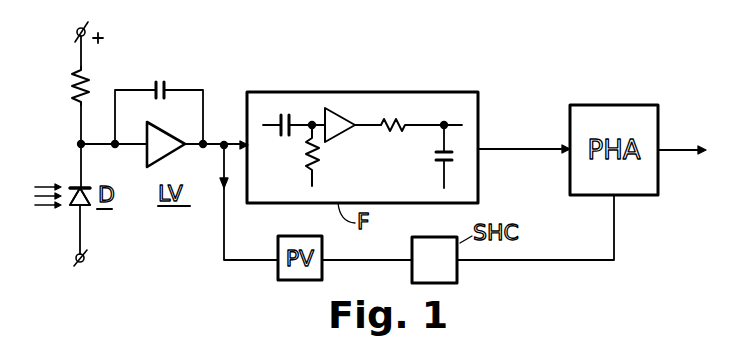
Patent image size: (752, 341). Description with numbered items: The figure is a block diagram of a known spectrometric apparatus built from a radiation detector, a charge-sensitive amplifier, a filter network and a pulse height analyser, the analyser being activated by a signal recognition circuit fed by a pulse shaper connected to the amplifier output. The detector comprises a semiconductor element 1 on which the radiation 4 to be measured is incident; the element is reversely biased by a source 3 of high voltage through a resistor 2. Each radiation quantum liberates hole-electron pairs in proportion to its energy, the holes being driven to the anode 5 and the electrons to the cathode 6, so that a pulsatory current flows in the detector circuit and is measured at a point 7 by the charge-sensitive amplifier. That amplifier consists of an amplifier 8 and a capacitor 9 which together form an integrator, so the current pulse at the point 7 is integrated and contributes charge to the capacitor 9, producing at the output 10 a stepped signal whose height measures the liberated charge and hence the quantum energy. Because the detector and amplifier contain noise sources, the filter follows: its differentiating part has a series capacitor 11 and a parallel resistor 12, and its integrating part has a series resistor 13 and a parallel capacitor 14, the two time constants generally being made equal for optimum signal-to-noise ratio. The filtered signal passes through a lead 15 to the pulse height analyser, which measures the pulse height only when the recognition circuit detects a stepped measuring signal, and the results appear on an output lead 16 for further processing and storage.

The semiconductor element 1 is at (88, 186).
The resistor 2 is at (88, 89).
The source of a high voltage 3 is at (86, 262).
The radiation 4 is at (43, 185).
The anode 5 is at (73, 209).
The cathode 6 is at (77, 187).
The point 7 is at (84, 141).
The amplifier 8 is at (170, 127).
The capacitor 9 is at (168, 85).
The output 10 is at (213, 141).
The series capacitor 11 is at (300, 113).
The parallel resistor 12 is at (320, 158).
The series resistor 13 is at (400, 118).
The parallel capacitor 14 is at (438, 162).
The lead 15 is at (517, 147).
The output lead 16 is at (677, 147).